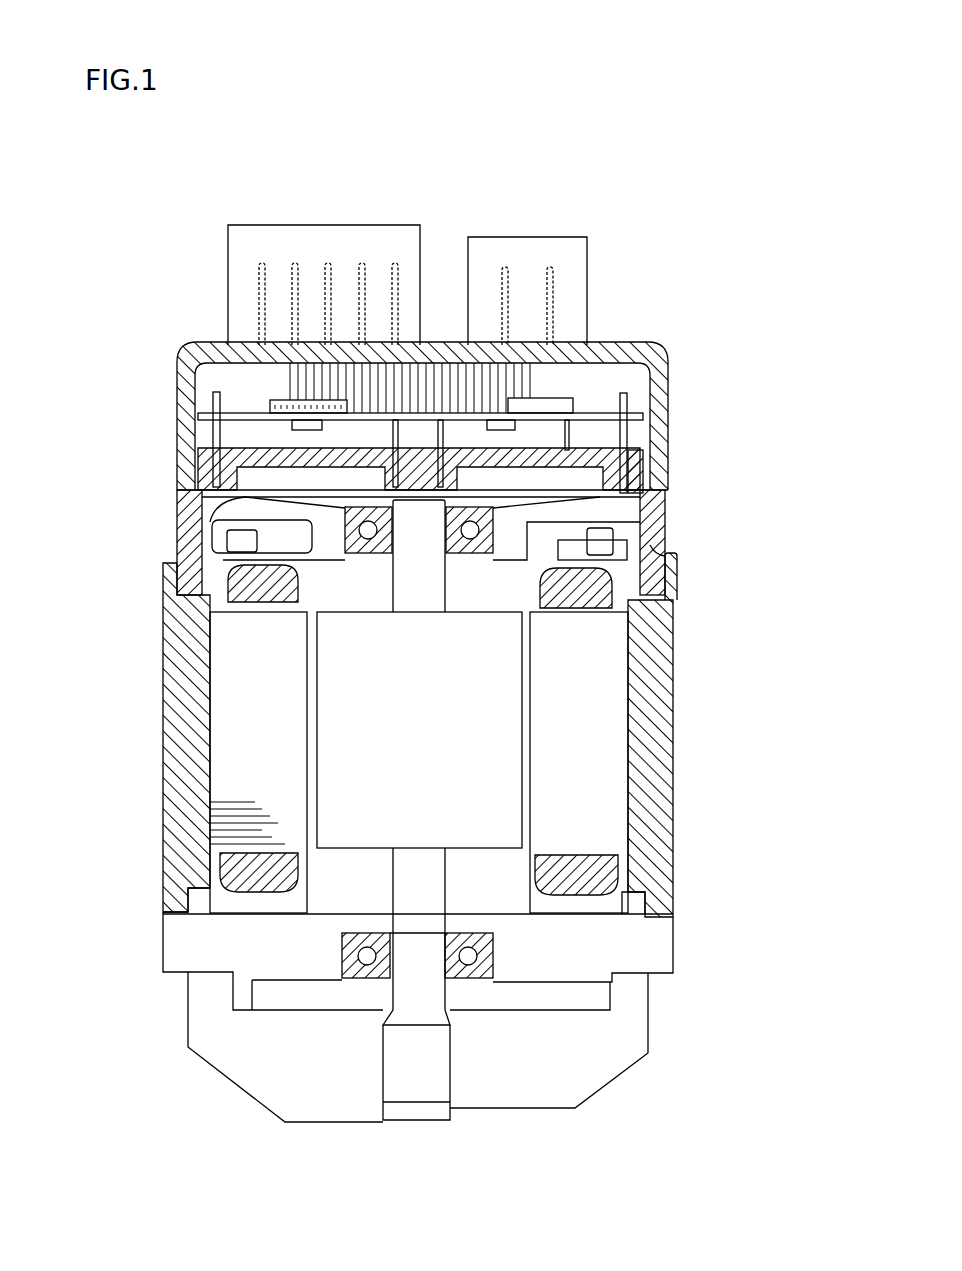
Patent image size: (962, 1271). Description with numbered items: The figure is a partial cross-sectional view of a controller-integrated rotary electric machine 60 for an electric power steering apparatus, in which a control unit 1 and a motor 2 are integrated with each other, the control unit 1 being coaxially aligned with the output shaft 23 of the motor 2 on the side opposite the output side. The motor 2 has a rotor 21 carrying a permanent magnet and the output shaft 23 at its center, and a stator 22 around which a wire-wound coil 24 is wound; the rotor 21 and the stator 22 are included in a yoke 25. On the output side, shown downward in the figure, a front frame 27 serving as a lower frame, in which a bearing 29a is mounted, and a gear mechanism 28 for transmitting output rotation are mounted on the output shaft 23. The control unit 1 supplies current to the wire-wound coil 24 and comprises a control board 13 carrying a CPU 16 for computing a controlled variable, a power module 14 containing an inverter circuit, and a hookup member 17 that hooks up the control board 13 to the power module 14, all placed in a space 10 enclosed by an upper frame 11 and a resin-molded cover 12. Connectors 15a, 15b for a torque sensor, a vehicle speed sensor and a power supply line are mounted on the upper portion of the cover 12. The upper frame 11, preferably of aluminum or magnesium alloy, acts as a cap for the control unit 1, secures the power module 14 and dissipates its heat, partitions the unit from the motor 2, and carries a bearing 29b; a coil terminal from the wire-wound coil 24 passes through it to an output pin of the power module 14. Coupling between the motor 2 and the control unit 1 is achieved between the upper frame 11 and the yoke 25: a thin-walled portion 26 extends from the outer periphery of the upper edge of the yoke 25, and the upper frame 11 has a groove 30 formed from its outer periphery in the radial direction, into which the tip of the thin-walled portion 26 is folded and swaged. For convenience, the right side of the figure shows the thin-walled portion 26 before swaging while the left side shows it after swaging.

The control unit 1 is at (170, 420).
The motor 2 is at (672, 858).
The space 10 is at (218, 378).
The upper frame 11 is at (177, 533).
The cover 12 is at (177, 463).
The control board 13 is at (638, 413).
The power module 14 is at (618, 448).
The connector 15a is at (588, 275).
The connector 15b is at (405, 228).
The CPU 16 is at (270, 400).
The hookup member 17 is at (642, 465).
The rotor 21 is at (508, 765).
The stator 22 is at (220, 790).
The output shaft 23 is at (440, 897).
The wire-wound coil 24 is at (230, 580).
The yoke 25 is at (163, 868).
The thin-walled portion 26 is at (677, 565).
The front frame 27 is at (168, 962).
The gear mechanism 28 is at (188, 1008).
The bearing 29a is at (478, 977).
The bearing 29b is at (345, 510).
The groove 30 is at (658, 553).
The controller-integrated rotary electric machine 60 is at (548, 237).